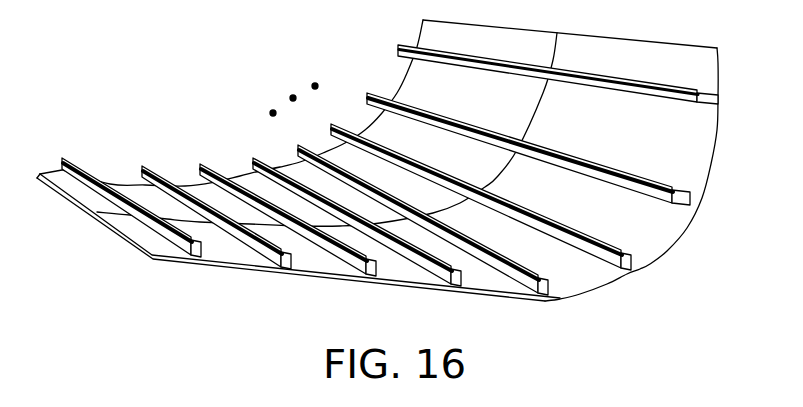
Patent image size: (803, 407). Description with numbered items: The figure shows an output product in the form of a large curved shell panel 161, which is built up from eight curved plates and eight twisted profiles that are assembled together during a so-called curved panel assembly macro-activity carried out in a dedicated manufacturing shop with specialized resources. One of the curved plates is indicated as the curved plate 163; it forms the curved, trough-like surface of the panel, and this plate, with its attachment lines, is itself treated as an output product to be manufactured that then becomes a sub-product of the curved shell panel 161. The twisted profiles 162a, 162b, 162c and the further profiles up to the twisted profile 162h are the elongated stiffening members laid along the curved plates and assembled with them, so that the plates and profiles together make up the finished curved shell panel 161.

The curved shell panel 161 is at (271, 53).
The twisted profile 162a is at (62, 158).
The twisted profile 162b is at (142, 166).
The twisted profile 162c is at (200, 164).
The twisted profile 162h is at (398, 47).
The curved plate 163 is at (679, 232).